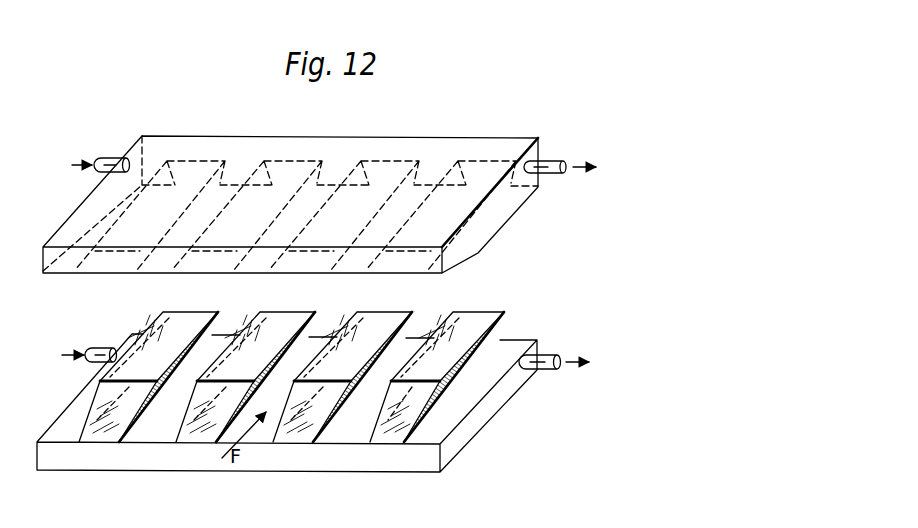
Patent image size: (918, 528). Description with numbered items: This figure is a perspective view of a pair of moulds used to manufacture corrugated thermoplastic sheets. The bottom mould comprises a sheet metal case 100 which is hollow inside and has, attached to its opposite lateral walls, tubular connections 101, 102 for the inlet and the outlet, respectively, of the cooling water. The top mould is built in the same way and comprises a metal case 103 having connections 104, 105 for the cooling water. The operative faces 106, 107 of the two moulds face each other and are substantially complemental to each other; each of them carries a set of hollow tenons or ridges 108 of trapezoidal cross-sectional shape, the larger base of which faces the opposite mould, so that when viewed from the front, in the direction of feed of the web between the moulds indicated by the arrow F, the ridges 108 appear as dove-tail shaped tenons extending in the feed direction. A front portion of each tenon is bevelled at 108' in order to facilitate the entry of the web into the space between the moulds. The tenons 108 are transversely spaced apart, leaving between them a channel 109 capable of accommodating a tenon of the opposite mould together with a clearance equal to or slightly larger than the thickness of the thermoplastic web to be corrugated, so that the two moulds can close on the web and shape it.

The sheet metal case 100 is at (485, 412).
The tubular connection 101 is at (103, 346).
The tubular connection 102 is at (545, 357).
The metal case 103 is at (434, 146).
The connection 104 is at (108, 158).
The connection 105 is at (549, 164).
The operative face 106 is at (161, 423).
The operative face 107 is at (488, 232).
The hollow tenons or ridges 108 is at (303, 362).
The bevelled front portion 108' is at (78, 400).
The channel 109 is at (233, 330).